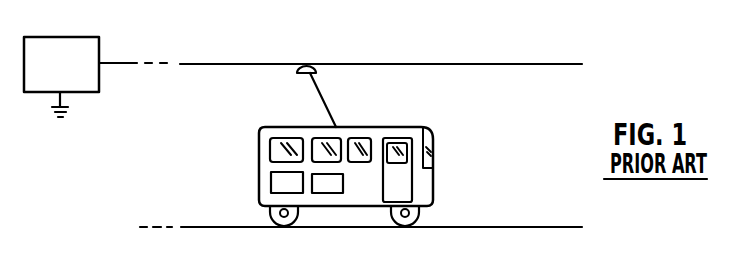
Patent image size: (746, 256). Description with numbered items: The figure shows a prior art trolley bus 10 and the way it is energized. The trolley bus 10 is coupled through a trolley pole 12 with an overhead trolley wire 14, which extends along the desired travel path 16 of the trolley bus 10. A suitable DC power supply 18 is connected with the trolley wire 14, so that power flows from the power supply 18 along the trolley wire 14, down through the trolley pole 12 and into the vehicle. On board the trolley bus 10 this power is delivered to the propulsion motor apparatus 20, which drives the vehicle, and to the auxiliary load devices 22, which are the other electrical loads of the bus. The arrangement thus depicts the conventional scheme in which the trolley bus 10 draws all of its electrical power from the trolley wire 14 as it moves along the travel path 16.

The trolley bus 10 is at (434, 156).
The trolley pole 12 is at (312, 93).
The trolley wire 14 is at (527, 64).
The travel path 16 is at (528, 227).
The DC power supply 18 is at (55, 33).
The propulsion motor apparatus 20 is at (272, 181).
The auxiliary load devices 22 is at (342, 188).